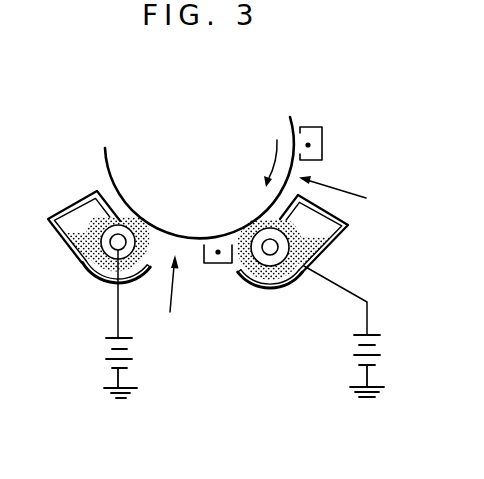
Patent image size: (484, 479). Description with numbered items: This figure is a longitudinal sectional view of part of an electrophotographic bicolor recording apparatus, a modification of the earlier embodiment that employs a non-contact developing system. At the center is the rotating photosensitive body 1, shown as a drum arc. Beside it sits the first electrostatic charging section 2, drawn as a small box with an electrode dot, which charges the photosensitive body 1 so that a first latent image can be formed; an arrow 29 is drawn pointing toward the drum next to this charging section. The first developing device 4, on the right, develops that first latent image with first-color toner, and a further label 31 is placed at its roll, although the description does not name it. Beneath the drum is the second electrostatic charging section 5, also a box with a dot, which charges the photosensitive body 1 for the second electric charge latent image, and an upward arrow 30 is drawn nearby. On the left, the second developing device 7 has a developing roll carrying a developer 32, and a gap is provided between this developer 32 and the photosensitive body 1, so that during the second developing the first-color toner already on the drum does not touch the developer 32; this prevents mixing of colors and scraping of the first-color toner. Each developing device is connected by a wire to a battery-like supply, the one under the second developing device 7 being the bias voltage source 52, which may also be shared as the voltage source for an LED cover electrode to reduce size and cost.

The photosensitive body 1 is at (110, 168).
The first electrostatic charging section 2 is at (322, 145).
The image exposure light 29 is at (358, 194).
The second developing device 7 is at (84, 270).
The developer 32 is at (143, 221).
The first developing device 4 is at (342, 237).
The developing sleeve of second developing device 31 is at (240, 232).
The bias voltage source 52 is at (95, 323).
The second electrostatic charging section 5 is at (218, 264).
The transfer material path arrow 30 is at (170, 313).